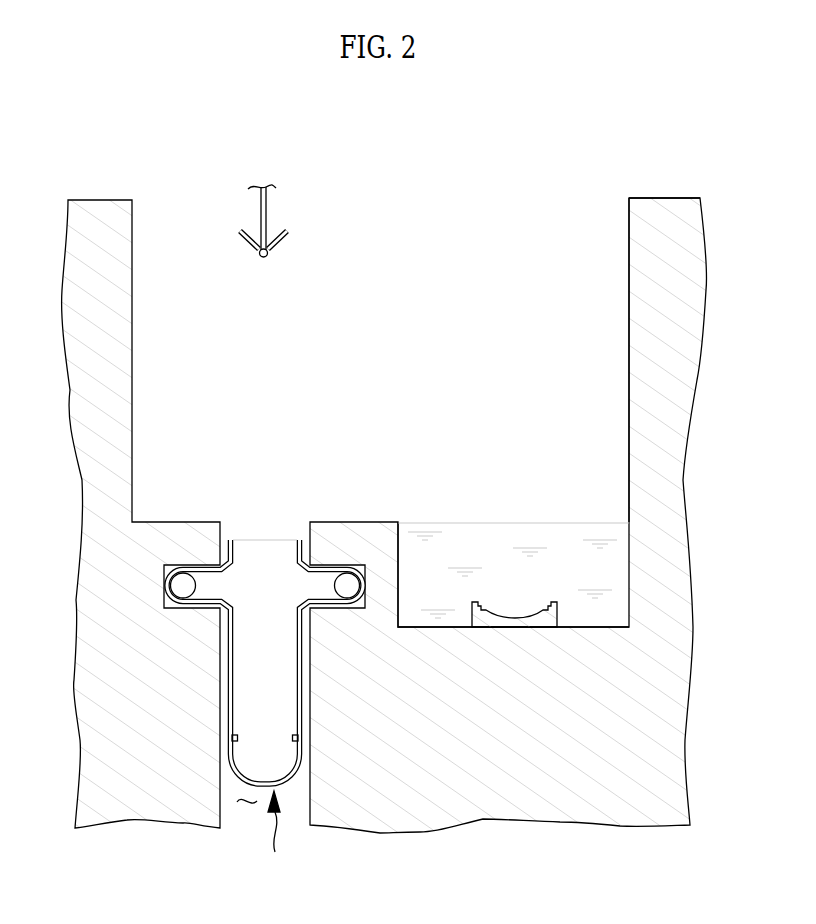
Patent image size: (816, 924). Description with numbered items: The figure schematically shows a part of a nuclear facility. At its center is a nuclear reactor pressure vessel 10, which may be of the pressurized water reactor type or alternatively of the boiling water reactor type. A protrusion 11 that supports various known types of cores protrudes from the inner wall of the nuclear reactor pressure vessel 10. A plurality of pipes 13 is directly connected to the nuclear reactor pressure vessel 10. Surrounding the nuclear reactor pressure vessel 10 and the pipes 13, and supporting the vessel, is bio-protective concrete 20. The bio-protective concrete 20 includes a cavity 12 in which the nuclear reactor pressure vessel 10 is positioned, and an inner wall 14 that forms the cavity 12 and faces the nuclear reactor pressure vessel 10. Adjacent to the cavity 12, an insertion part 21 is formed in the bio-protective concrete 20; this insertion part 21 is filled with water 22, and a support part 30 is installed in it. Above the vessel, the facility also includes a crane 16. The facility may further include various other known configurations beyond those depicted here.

The nuclear reactor pressure vessel 10 is at (273, 839).
The protrusion 11 is at (235, 740).
The cavity 12 is at (243, 806).
The pipes 13 is at (183, 582).
The inner wall 14 is at (229, 684).
The crane 16 is at (267, 203).
The bio-protective concrete 20 is at (527, 805).
The insertion part 21 is at (603, 627).
The water 22 is at (595, 522).
The support part 30 is at (527, 602).